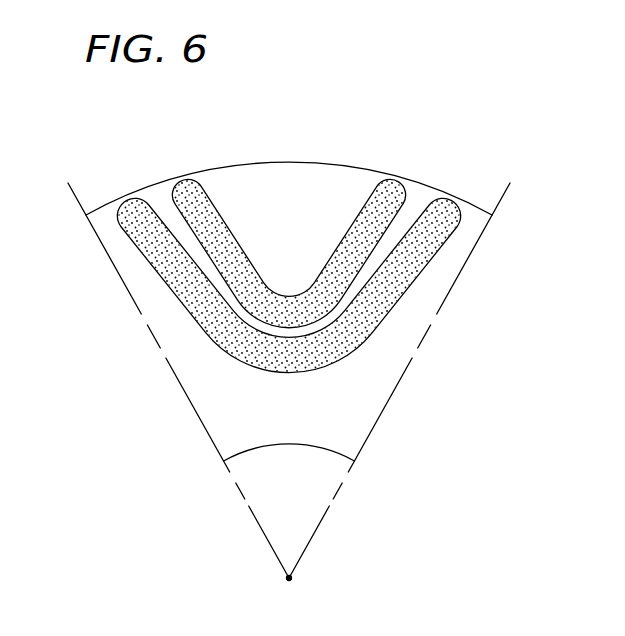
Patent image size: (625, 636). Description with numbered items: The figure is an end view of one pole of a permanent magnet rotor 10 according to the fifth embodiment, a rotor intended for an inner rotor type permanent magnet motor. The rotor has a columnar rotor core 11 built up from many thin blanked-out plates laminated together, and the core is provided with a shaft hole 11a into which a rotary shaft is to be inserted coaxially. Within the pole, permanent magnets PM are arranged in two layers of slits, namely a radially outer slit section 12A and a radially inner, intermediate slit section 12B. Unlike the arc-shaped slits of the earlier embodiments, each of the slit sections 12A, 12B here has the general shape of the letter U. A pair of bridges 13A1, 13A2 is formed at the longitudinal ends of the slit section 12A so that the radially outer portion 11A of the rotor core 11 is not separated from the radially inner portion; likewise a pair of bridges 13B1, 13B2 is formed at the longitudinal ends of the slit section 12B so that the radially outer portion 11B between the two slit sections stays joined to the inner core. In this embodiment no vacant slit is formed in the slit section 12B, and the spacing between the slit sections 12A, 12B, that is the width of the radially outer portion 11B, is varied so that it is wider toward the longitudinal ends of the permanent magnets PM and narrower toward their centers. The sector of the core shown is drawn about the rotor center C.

The permanent magnet rotor 10 is at (306, 119).
The rotor core 11 is at (358, 393).
The shaft hole 11a is at (305, 448).
The radially outer portion 11A is at (312, 180).
The radially outer portion 11B is at (217, 280).
The slit section 12A is at (221, 219).
The intermediate slit section 12B is at (154, 273).
The bridge 13A1 is at (178, 176).
The bridge 13A2 is at (397, 177).
The bridge 13B1 is at (110, 203).
The bridge 13B2 is at (466, 203).
The permanent magnet PM is at (373, 225).
The center of rotor C is at (287, 578).